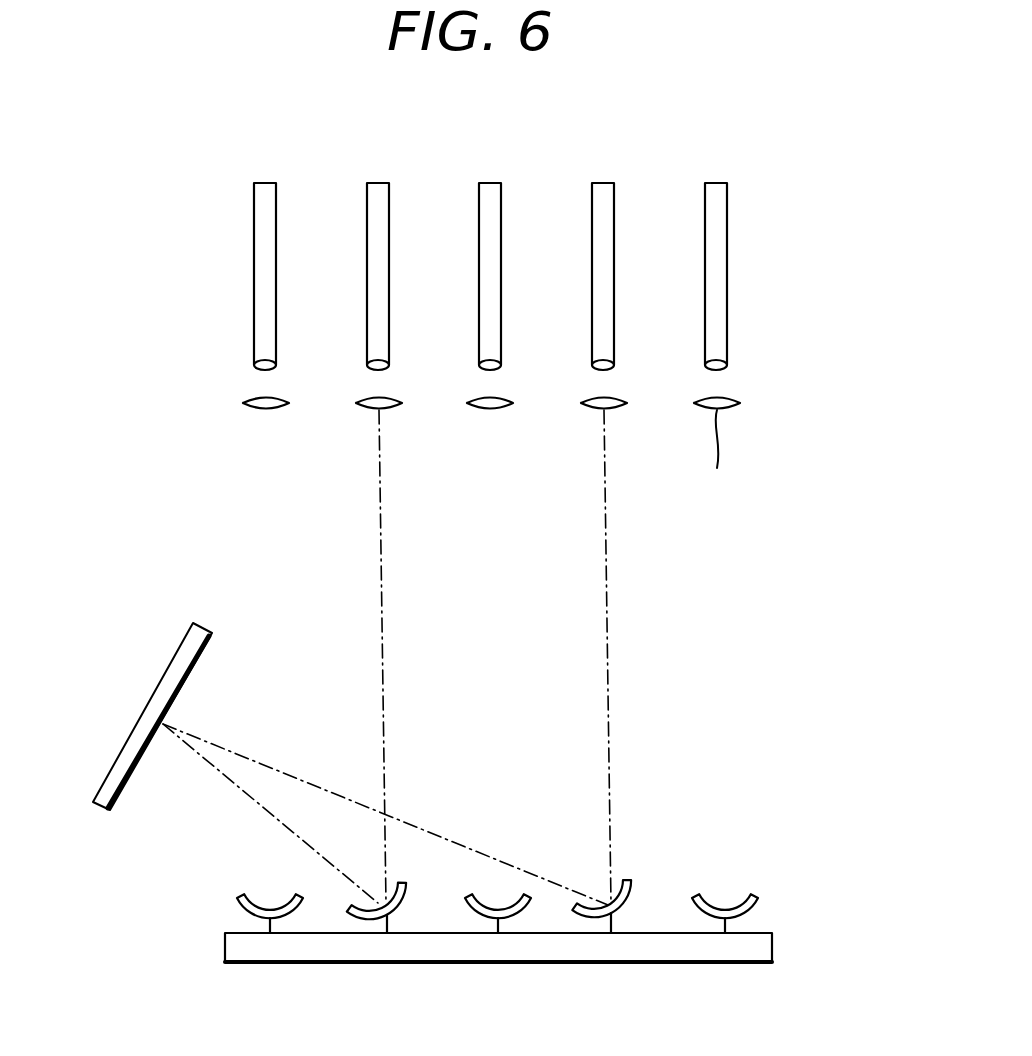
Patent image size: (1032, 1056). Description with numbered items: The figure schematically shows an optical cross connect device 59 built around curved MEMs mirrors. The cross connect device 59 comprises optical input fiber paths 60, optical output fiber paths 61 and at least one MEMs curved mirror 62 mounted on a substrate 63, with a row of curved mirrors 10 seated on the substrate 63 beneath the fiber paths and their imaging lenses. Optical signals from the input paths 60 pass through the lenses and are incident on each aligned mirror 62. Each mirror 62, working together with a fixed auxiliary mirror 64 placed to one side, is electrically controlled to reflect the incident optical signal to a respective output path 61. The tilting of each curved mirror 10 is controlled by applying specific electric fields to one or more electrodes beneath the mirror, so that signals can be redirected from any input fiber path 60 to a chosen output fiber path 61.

The curved mirror 10 is at (262, 905).
The cross connect device 59 is at (838, 533).
The optical input fiber paths 60 is at (388, 232).
The optical output fiber paths 61 is at (613, 228).
The MEMs curved mirror 62 is at (485, 921).
The substrate 63 is at (662, 963).
The fixed auxiliary mirror 64 is at (142, 717).